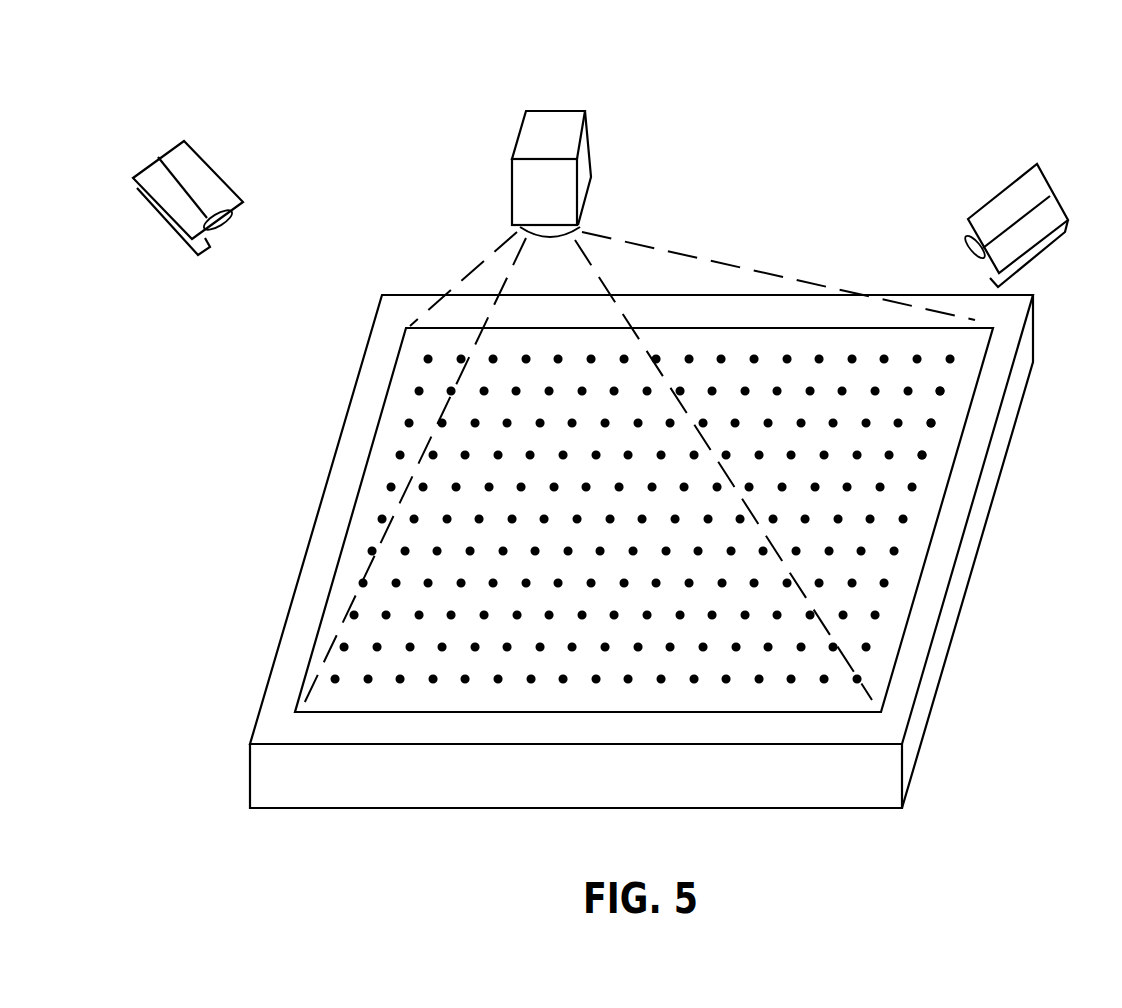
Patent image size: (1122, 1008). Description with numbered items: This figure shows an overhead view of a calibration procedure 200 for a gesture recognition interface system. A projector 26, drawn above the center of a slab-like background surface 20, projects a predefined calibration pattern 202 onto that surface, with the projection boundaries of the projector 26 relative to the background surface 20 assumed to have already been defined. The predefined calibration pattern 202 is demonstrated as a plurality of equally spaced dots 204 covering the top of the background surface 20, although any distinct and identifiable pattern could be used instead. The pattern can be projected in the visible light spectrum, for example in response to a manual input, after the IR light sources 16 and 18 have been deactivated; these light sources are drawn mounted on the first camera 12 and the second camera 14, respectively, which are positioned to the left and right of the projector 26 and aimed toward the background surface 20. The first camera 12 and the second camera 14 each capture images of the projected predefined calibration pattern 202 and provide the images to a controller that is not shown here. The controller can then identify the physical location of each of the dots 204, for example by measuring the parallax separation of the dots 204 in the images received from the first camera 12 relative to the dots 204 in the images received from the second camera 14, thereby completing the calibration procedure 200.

The calibration procedure 200 is at (128, 71).
The first camera 12 is at (210, 165).
The IR light source 16 is at (168, 223).
The projector 26 is at (592, 135).
The second camera 14 is at (1045, 176).
The IR light source 18 is at (1050, 243).
The background surface 20 is at (933, 533).
The predefined calibration pattern 202 is at (395, 429).
The dots 204 is at (945, 458).